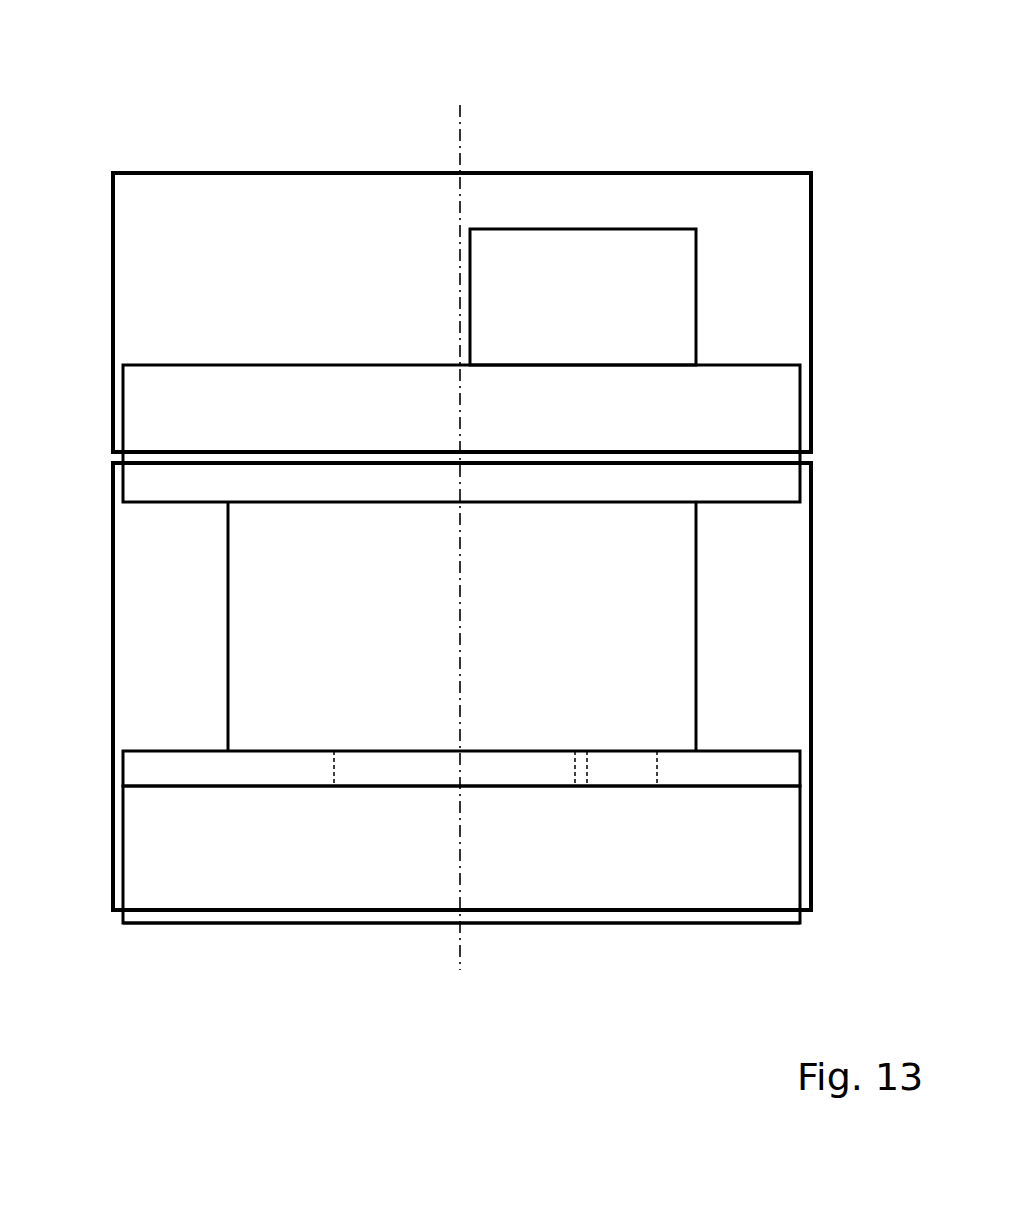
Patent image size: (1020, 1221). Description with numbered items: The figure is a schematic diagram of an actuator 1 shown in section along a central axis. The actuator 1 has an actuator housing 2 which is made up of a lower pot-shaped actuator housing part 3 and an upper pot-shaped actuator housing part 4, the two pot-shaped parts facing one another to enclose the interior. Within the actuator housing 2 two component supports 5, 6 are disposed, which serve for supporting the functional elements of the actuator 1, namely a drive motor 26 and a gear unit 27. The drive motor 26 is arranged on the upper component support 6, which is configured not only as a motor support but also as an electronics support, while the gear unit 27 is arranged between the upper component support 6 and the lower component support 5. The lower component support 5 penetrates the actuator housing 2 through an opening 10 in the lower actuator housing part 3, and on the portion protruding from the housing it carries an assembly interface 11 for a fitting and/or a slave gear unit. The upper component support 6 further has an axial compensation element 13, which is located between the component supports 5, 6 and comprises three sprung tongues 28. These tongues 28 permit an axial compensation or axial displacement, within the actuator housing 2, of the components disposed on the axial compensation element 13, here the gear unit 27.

The actuator 1 is at (311, 112).
The actuator housing 2 is at (124, 193).
The lower pot-shaped actuator housing part 3 is at (139, 681).
The upper pot-shaped actuator housing part 4 is at (139, 244).
The lower component support 5 is at (139, 843).
The upper component support 6 is at (139, 416).
The opening 10 is at (187, 911).
The assembly interface 11 is at (268, 926).
The axial compensation element 13 is at (750, 768).
The drive motor 26 is at (620, 310).
The gear unit 27 is at (620, 640).
The sprung tongues 28 is at (628, 773).